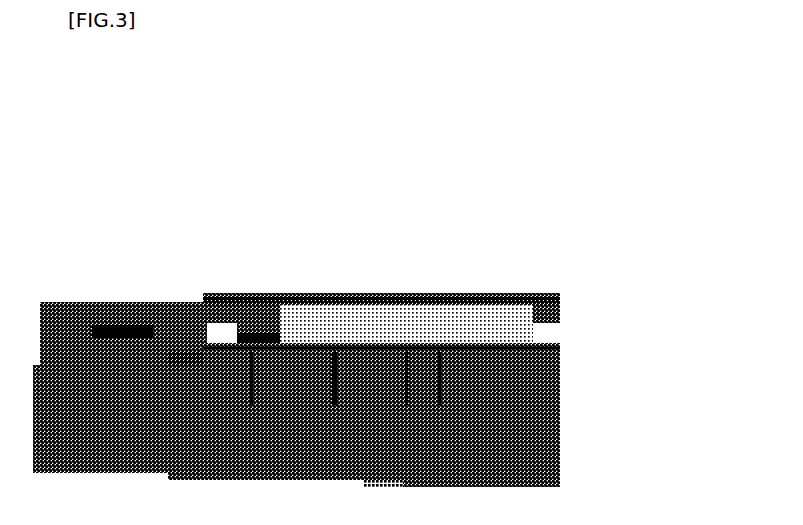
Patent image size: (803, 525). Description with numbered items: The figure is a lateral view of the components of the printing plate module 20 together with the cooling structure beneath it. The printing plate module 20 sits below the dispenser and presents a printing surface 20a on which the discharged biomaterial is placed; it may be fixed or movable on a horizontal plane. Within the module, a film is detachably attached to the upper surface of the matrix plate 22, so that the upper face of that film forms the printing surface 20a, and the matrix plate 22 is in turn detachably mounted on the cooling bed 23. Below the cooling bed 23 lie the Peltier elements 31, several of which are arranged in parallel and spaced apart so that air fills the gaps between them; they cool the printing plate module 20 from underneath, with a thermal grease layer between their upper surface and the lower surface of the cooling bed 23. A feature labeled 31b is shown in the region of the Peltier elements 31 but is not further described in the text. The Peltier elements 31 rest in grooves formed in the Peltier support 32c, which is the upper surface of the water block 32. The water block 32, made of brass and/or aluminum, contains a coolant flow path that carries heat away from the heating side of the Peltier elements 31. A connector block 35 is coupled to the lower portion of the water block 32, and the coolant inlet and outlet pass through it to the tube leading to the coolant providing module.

The printing plate module 20 is at (523, 268).
The printing surface 20a is at (308, 332).
The matrix plate 22 is at (510, 290).
The cooling bed 23 is at (560, 303).
The Peltier element 31 is at (278, 298).
The recess of housing 31b is at (553, 333).
The water block 32 is at (560, 375).
The Peltier support 32c is at (560, 338).
The connector block 35 is at (560, 433).